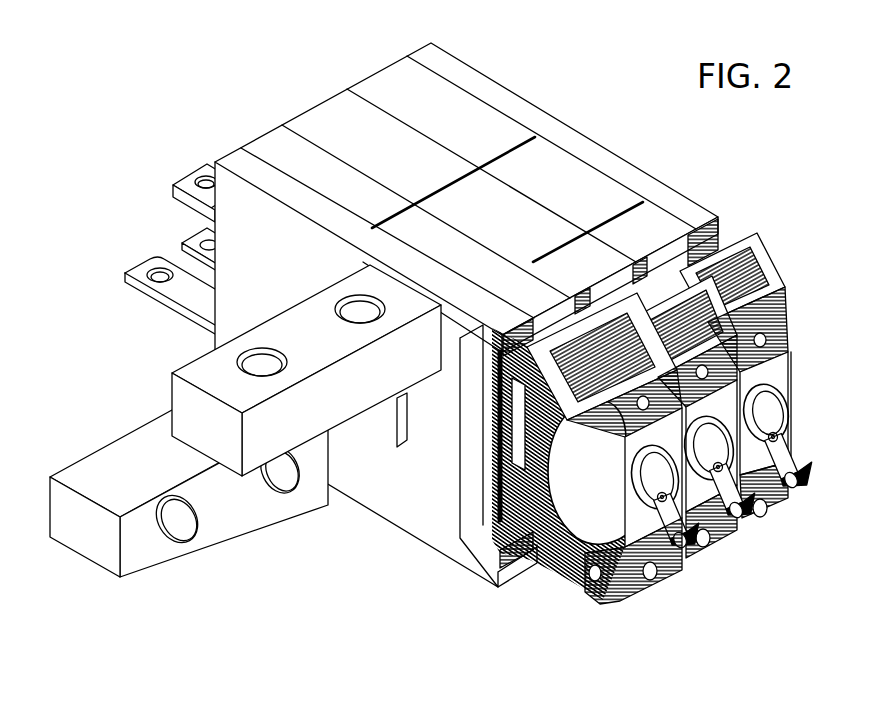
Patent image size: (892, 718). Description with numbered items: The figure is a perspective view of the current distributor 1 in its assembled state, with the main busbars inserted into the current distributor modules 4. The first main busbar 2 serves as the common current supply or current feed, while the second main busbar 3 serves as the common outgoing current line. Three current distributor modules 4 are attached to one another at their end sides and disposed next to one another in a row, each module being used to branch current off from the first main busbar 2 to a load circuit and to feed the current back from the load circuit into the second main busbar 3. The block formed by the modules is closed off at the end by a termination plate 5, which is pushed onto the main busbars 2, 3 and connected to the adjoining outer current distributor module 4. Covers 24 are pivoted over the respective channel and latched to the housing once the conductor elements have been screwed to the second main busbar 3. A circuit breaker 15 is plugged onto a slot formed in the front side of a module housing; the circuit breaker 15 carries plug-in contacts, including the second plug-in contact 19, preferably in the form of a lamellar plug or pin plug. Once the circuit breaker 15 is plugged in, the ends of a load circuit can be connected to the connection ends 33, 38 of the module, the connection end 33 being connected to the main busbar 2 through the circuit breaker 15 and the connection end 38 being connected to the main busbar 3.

The current distributor 1 is at (116, 66).
The first main busbar 2 is at (340, 410).
The second main busbar 3 is at (97, 448).
The current distributor module 4 is at (297, 158).
The termination plate 5 is at (691, 202).
The circuit breaker 15 is at (761, 303).
The second plug-in contact 19 is at (582, 580).
The cover 24 is at (557, 180).
The connection end 33 is at (178, 178).
The connection end 38 is at (134, 265).